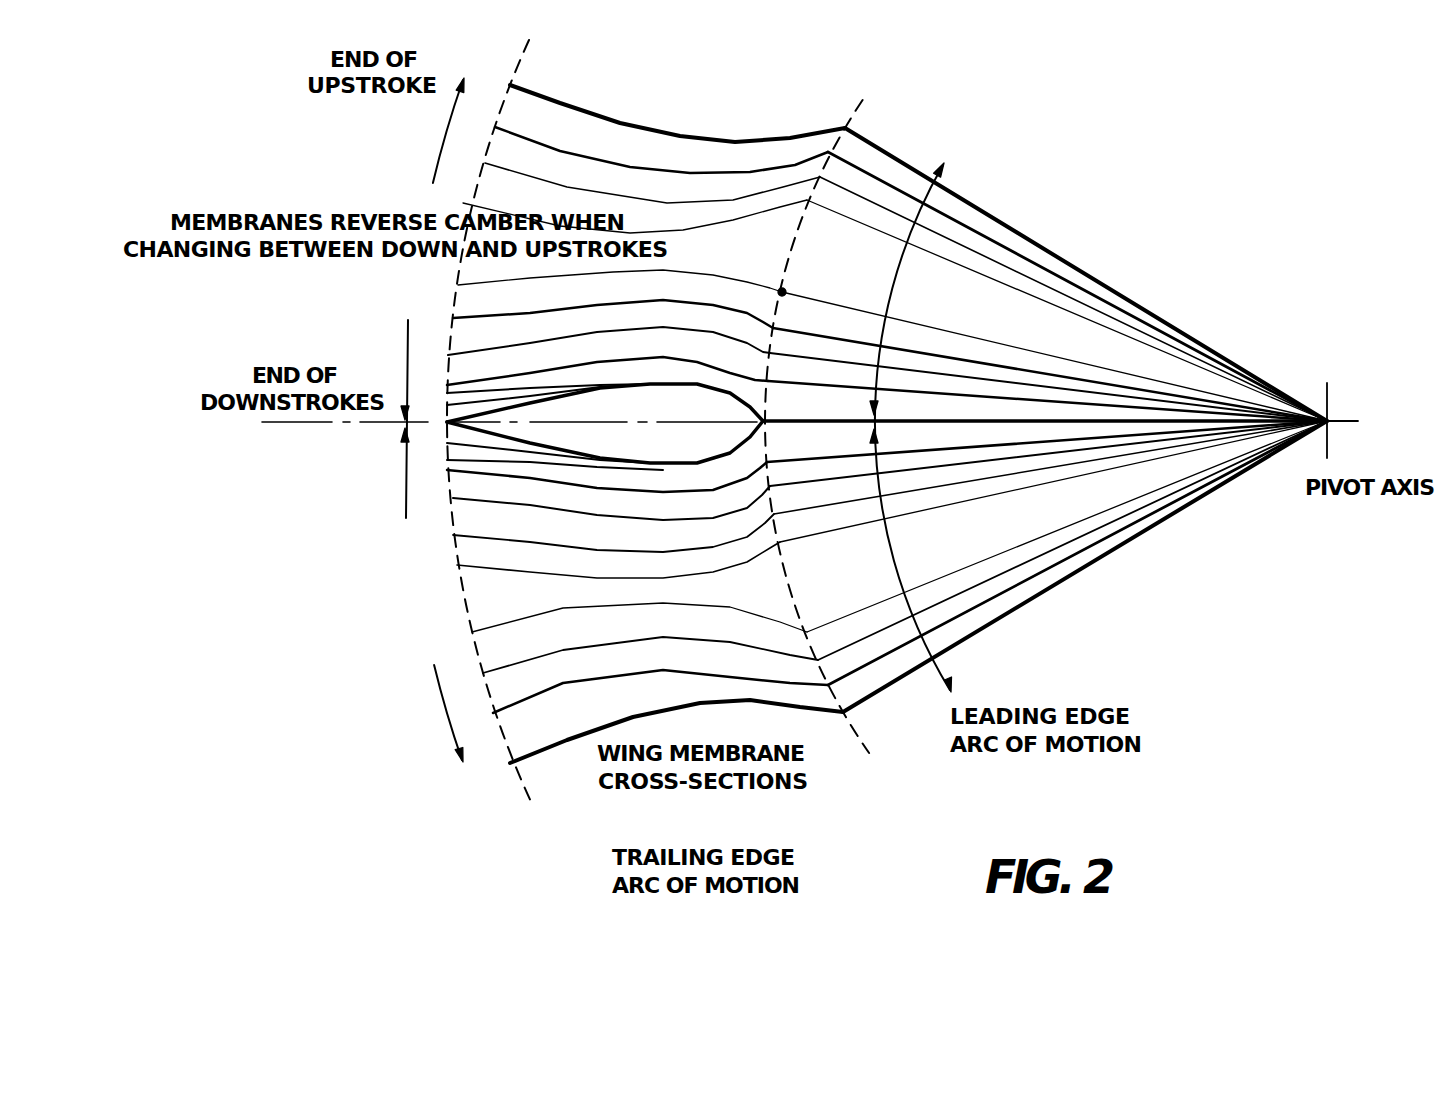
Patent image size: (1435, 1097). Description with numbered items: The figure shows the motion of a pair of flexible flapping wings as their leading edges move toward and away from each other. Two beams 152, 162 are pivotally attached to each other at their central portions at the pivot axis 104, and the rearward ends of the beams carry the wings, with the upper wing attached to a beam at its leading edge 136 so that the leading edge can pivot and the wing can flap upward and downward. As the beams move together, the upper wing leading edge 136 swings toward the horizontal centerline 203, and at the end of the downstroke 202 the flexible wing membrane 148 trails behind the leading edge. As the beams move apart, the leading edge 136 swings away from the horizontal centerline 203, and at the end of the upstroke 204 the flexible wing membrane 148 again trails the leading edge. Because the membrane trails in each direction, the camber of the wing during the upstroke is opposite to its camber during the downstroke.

The pivot axis 104 is at (1330, 424).
The leading edge 136 is at (856, 118).
The flexible wing membrane 148 is at (713, 138).
The beam 152 is at (1194, 340).
The beam 162 is at (1090, 565).
The end of the downstroke 202 is at (408, 338).
The horizontal centerline 203 is at (362, 423).
The end of the upstroke 204 is at (440, 153).